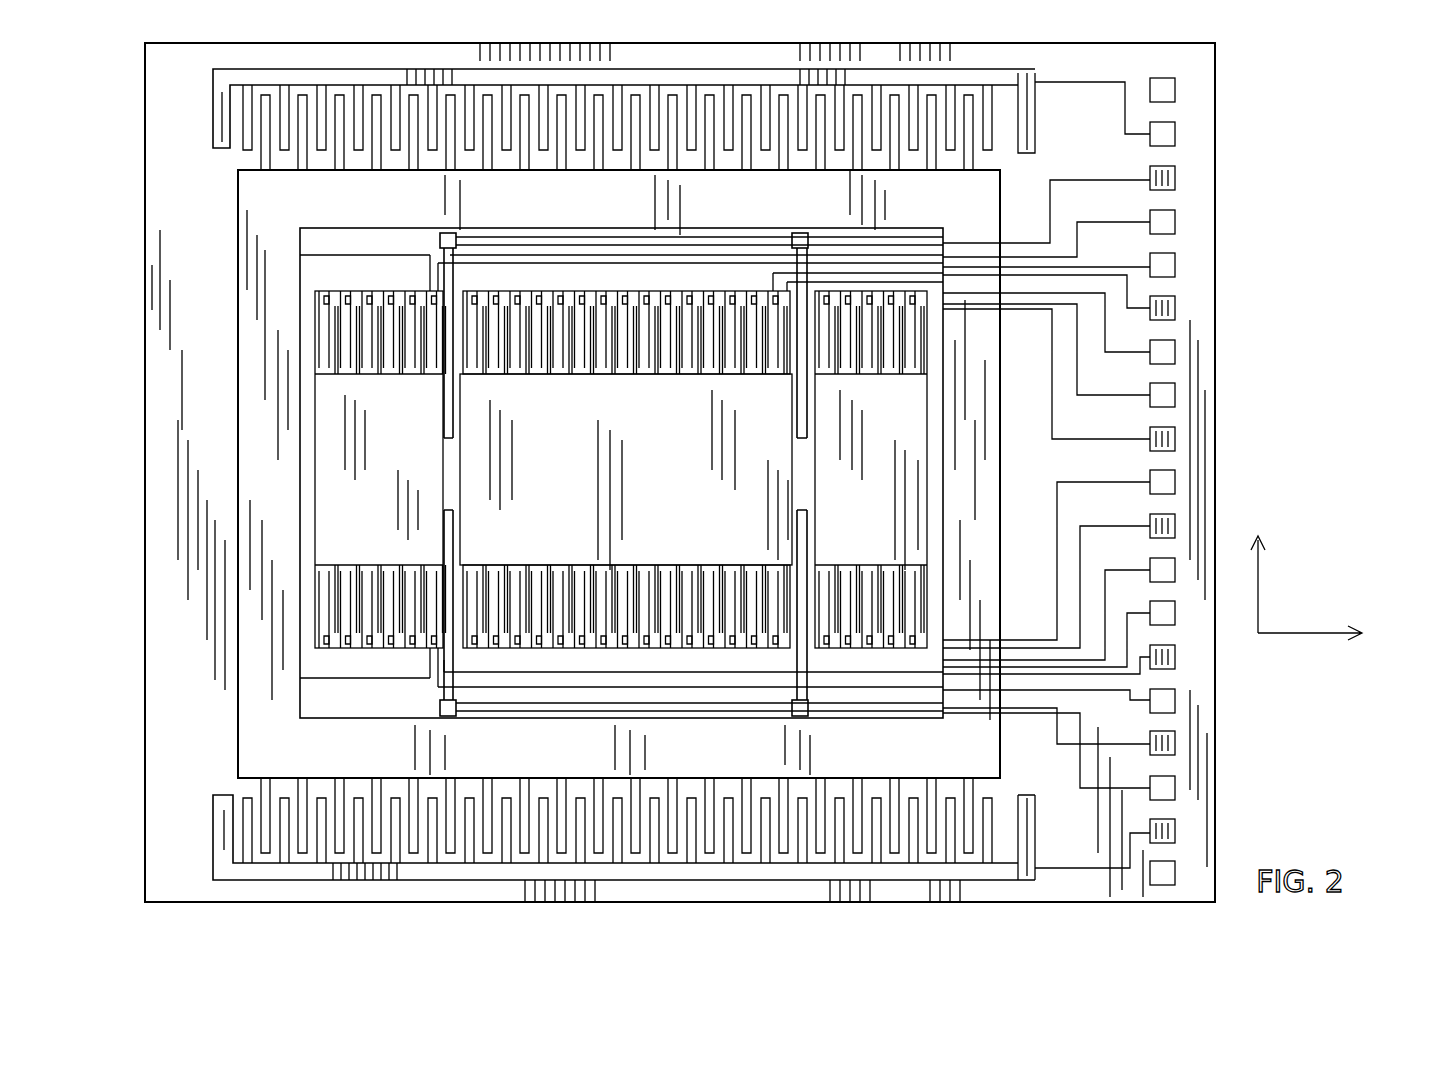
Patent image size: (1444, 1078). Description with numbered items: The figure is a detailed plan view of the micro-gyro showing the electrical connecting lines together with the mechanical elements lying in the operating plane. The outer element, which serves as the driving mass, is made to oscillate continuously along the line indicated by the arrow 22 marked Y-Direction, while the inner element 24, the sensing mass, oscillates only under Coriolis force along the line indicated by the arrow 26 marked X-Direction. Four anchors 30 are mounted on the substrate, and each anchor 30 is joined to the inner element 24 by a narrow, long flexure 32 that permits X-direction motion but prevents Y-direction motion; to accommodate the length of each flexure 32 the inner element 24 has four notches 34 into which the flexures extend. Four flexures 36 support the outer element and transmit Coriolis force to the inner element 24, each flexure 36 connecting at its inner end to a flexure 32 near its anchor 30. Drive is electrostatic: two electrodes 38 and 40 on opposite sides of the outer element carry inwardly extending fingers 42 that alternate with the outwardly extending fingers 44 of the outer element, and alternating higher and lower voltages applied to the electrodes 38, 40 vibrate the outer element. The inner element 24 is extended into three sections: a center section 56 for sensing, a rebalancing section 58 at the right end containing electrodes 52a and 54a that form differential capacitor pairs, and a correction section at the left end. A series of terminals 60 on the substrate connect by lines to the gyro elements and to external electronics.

The arrow 22 is at (1262, 572).
The inner element 24 is at (341, 527).
The arrow 26 is at (1300, 632).
The anchor 30 is at (456, 236).
The flexure 32 is at (455, 420).
The notch 34 is at (433, 418).
The flexure 36 is at (335, 256).
The electrode 38 is at (262, 72).
The electrode 40 is at (268, 876).
The fingers 42 is at (978, 150).
The fingers 44 is at (965, 165).
The electrode 52a is at (438, 672).
The electrode 54a is at (410, 648).
The center section 56 is at (645, 489).
The rebalancing section 58 is at (905, 412).
The terminals 60 is at (1170, 138).